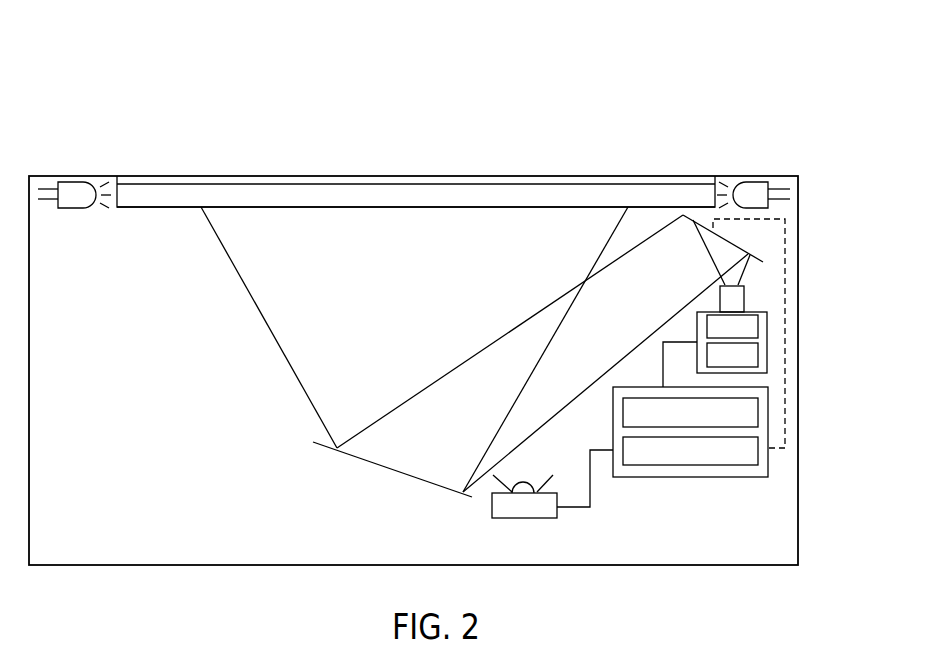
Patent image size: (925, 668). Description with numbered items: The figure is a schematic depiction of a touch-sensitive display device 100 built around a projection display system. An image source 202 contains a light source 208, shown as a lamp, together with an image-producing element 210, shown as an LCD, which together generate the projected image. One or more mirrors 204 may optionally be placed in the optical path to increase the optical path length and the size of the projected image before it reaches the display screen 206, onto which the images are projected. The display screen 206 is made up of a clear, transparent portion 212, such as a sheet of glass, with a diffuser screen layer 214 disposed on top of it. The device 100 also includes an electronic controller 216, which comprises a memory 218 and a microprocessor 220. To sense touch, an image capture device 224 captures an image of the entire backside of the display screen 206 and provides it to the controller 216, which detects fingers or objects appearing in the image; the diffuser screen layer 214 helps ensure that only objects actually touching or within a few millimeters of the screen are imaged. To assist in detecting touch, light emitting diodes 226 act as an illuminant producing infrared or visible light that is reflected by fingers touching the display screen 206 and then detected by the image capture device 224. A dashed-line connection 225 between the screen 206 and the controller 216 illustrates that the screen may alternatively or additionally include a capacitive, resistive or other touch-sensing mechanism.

The touch-sensitive display device 100 is at (146, 60).
The image source 202 is at (770, 340).
The mirrors 204 is at (732, 244).
The display screen 206 is at (228, 170).
The light source 208 is at (760, 356).
The image-producing element 210 is at (760, 325).
The clear, transparent portion 212 is at (264, 207).
The diffuser screen layer 214 is at (296, 182).
The electronic controller 216 is at (633, 478).
The memory 218 is at (760, 411).
The microprocessor 220 is at (760, 455).
The image capture device 224 is at (524, 505).
The dashed-line connection 225 is at (788, 268).
The light emitting diodes 226 is at (77, 181).